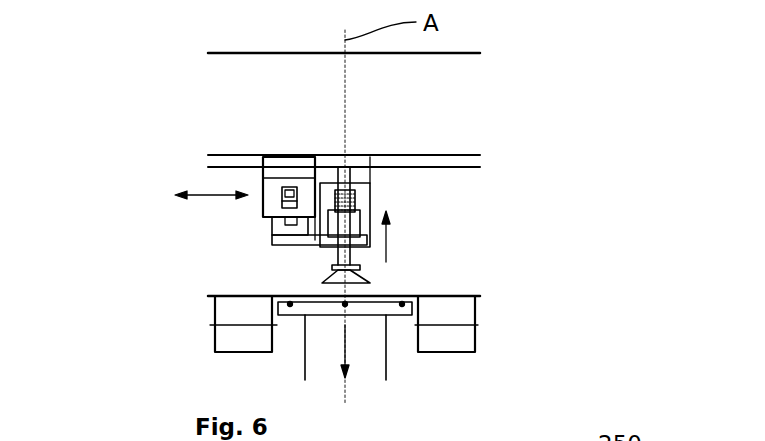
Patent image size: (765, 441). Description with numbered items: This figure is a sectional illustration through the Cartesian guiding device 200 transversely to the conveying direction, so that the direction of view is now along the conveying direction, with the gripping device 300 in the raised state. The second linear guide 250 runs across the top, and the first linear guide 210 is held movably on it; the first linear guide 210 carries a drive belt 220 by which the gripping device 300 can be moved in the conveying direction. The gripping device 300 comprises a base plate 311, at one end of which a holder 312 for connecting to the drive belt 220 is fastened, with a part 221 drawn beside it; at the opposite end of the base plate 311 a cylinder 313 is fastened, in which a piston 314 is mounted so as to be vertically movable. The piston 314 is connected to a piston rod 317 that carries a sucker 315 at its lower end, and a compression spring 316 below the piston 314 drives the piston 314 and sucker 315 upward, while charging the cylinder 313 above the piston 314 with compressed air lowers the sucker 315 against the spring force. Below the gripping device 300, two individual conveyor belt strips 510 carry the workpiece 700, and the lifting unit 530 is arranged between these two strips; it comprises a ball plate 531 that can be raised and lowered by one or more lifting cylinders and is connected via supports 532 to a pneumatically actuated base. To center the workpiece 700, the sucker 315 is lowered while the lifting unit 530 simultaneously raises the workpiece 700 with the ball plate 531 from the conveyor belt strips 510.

The Cartesian guiding device 200 is at (140, 117).
The first linear guide 210 is at (272, 195).
The drive belt 220 is at (290, 203).
The base plate 221 is at (280, 228).
The second linear guide 250 is at (435, 100).
The gripping device 300 is at (403, 208).
The base plate 311 is at (370, 237).
The holder 312 is at (270, 225).
The cylinder 313 is at (367, 165).
The piston 314 is at (313, 157).
The sucker 315 is at (367, 277).
The compression spring 316 is at (358, 202).
The piston rod 317 is at (345, 157).
The conveyor belt strips 510 is at (223, 313).
The lifting unit 530 is at (413, 372).
The ball plate 531 is at (295, 315).
The supports 532 is at (386, 365).
The workpiece 700 is at (475, 297).